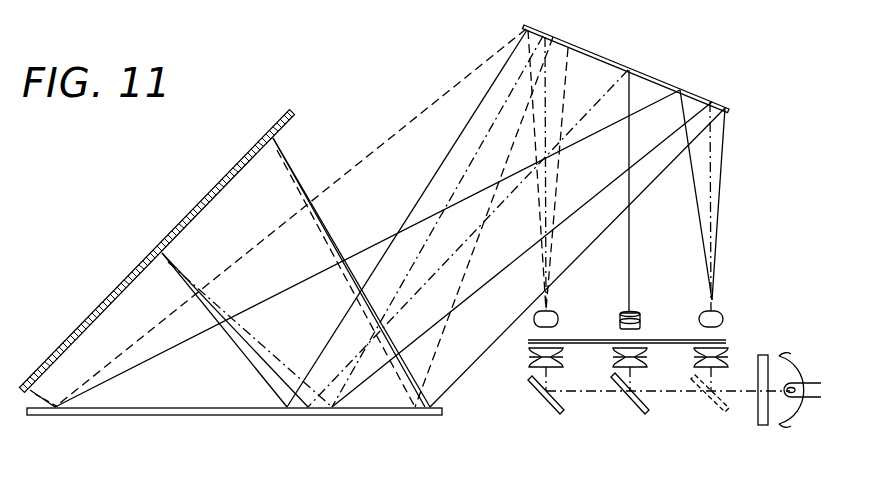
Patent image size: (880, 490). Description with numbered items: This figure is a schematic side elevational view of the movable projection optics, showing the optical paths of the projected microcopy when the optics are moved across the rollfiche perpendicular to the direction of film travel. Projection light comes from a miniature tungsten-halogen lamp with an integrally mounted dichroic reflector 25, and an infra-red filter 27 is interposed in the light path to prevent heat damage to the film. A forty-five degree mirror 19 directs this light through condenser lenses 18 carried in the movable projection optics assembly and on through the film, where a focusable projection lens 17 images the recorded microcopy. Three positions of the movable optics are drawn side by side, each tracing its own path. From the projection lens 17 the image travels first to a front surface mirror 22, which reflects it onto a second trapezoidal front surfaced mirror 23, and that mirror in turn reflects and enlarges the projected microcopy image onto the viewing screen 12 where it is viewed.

The viewing screen 12 is at (197, 203).
The front surface mirror 22 is at (652, 73).
The trapezoidal front surfaced mirror 23 is at (206, 415).
The focusable projection lens 17 is at (559, 323).
The condenser lenses 18 is at (530, 351).
The 45° mirror 19 is at (548, 407).
The dichroic reflector 25 is at (793, 412).
The infra-red filter 27 is at (763, 426).